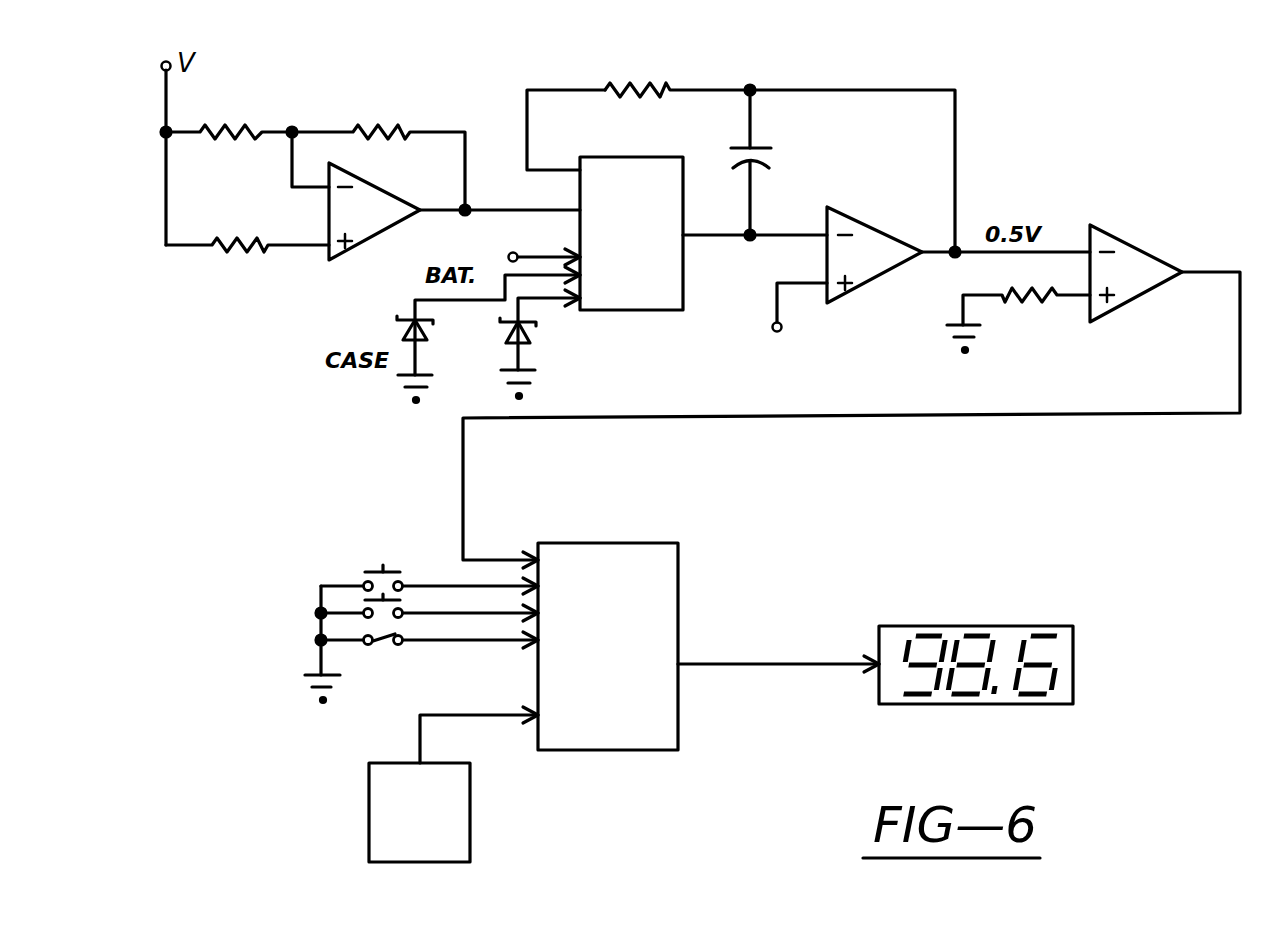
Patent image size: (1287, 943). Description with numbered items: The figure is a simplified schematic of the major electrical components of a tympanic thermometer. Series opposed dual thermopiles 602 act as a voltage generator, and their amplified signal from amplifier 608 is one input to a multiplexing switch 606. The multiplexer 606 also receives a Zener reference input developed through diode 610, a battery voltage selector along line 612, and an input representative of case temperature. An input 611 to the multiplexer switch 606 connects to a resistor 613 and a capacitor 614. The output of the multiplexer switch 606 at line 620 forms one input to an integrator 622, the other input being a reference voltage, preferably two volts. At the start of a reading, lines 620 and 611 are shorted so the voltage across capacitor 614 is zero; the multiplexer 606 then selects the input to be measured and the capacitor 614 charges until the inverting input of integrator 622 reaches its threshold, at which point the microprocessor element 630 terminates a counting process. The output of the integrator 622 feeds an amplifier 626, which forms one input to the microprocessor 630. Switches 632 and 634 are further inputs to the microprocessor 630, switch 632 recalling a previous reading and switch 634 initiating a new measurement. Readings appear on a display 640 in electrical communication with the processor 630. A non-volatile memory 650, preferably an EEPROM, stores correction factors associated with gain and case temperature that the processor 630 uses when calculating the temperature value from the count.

The series opposed dual thermopiles 602 is at (240, 253).
The multiplexing switch 606 is at (668, 260).
The amplifier 608 is at (371, 232).
The Zener reference diode 610 is at (532, 338).
The input line to multiplexer switch 611 is at (527, 126).
The battery voltage selector line 612 is at (517, 252).
The resistor 613 is at (637, 88).
The capacitor 614 is at (757, 150).
The output line of multiplexer switch 620 is at (785, 240).
The integrator 622 is at (895, 250).
The amplifier 626 is at (1155, 275).
The microprocessor element 630 is at (640, 670).
The switch 632 is at (365, 578).
The switch 634 is at (364, 601).
The display 640 is at (1003, 630).
The non-volatile memory 650 is at (452, 834).